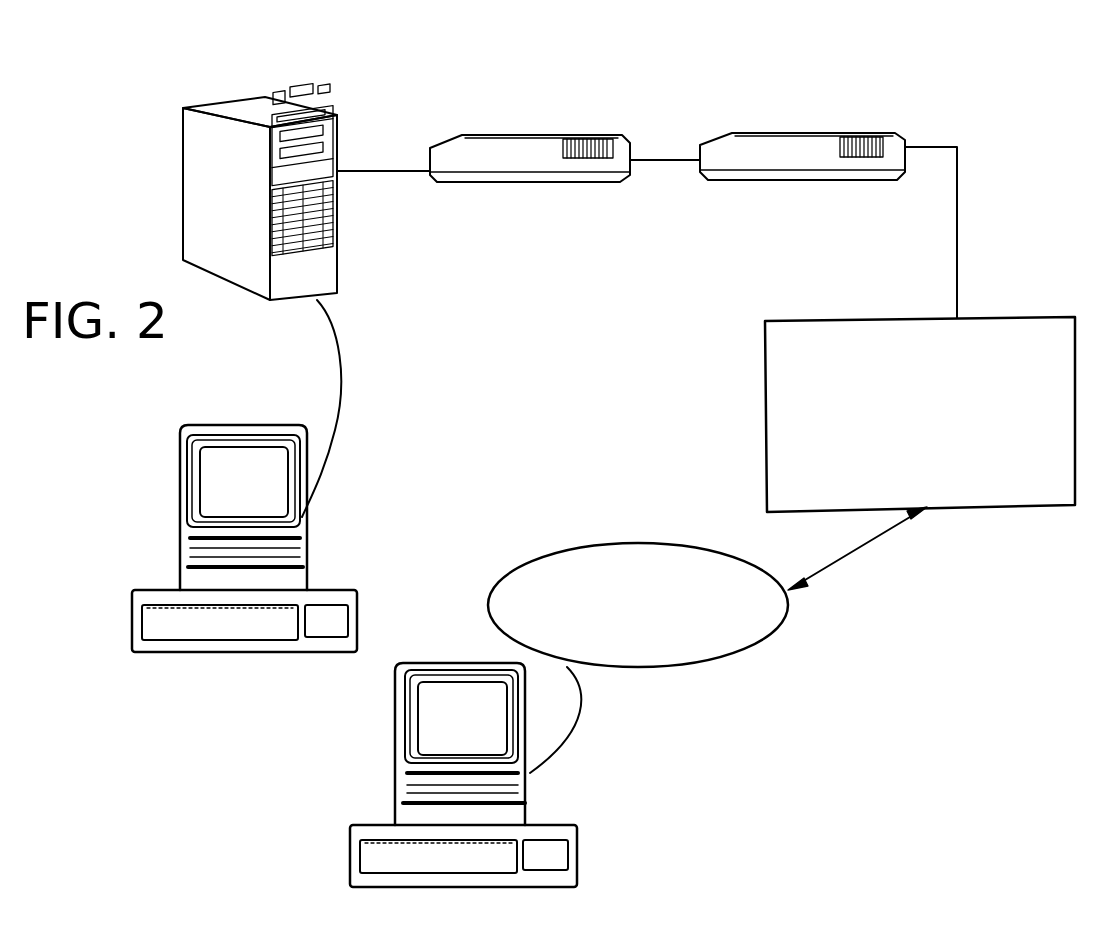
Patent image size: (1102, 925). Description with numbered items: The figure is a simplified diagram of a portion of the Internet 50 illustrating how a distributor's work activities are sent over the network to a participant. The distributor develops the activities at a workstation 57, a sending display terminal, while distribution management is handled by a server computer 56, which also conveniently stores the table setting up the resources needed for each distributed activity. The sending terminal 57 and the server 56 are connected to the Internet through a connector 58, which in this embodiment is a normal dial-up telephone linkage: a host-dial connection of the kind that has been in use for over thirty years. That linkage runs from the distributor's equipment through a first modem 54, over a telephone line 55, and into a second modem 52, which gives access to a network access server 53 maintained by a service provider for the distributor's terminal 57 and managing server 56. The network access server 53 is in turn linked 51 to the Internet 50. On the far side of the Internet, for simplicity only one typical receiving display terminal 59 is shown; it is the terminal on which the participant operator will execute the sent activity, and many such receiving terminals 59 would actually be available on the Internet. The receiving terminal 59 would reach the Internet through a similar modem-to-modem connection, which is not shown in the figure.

The Internet 50 is at (778, 628).
The link 51 is at (847, 558).
The modem 52 is at (822, 132).
The network access server 53 is at (1022, 393).
The modem 54 is at (503, 138).
The telephone line 55 is at (662, 160).
The server computer 56 is at (228, 153).
The workstation 57 is at (178, 455).
The connector 58 is at (363, 171).
The receiving display terminal 59 is at (577, 840).